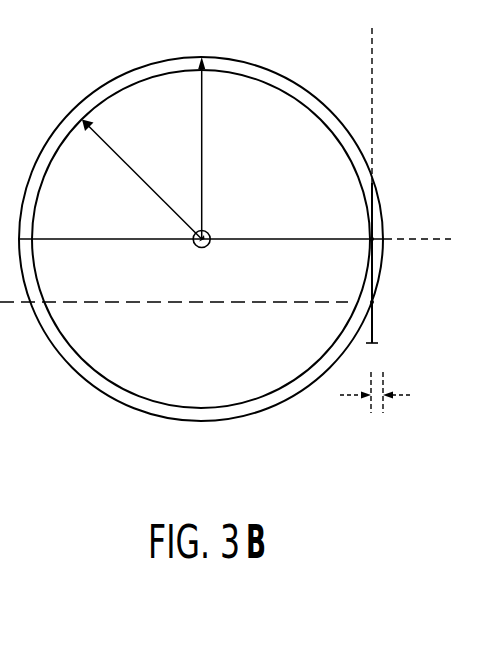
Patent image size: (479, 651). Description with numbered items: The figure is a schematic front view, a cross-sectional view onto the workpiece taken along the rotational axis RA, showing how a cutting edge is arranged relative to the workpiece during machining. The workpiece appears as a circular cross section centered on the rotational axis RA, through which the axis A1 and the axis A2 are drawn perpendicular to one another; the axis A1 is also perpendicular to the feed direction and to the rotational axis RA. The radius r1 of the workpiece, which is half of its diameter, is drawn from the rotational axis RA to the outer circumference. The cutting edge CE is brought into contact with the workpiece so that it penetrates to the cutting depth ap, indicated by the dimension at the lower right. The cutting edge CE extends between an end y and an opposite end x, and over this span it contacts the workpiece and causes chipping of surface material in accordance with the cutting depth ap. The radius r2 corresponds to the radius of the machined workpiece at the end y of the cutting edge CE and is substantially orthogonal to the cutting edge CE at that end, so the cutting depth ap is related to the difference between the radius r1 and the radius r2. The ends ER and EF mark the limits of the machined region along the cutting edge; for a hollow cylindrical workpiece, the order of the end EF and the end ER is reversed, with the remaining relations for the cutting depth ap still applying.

The radius r1 is at (204, 121).
The radius r2 is at (138, 180).
The rotational axis RA is at (207, 229).
The axis A1 is at (437, 238).
The axis A2 is at (374, 79).
The end ER is at (373, 186).
The end EF is at (373, 345).
The cutting edge CE is at (374, 266).
The end y is at (373, 239).
The end x is at (373, 302).
The cutting depth ap is at (374, 399).